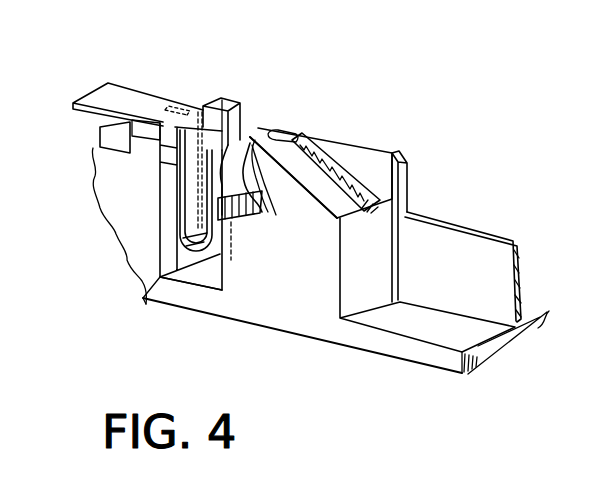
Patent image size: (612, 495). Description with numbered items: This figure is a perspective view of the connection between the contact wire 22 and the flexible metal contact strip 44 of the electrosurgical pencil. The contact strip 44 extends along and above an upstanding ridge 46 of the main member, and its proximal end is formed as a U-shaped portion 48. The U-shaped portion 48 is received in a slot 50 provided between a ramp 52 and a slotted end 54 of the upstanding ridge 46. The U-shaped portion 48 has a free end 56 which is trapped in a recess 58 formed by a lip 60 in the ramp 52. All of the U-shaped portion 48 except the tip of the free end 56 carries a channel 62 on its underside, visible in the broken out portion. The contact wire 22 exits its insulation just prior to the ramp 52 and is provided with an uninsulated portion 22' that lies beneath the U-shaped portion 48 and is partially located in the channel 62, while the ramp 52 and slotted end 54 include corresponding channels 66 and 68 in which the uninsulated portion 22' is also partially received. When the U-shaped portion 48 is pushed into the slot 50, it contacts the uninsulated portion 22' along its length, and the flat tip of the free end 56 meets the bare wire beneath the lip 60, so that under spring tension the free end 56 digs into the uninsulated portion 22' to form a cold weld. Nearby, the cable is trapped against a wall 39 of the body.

The main insulated contact wire 22 is at (412, 226).
The uninsulated portion 22' is at (293, 170).
The wall 39 is at (492, 233).
The flexible metal contact strip 44 is at (140, 93).
The upstanding ridge 46 is at (95, 177).
The U-shaped portion 48 is at (162, 300).
The slot 50 is at (207, 272).
The ramp 52 is at (346, 150).
The slotted end 54 is at (250, 118).
The free end 56 is at (183, 225).
The recess 58 is at (180, 190).
The lip 60 is at (280, 172).
The channel 62 is at (100, 133).
The channel 66 is at (258, 230).
The channel 68 is at (193, 130).